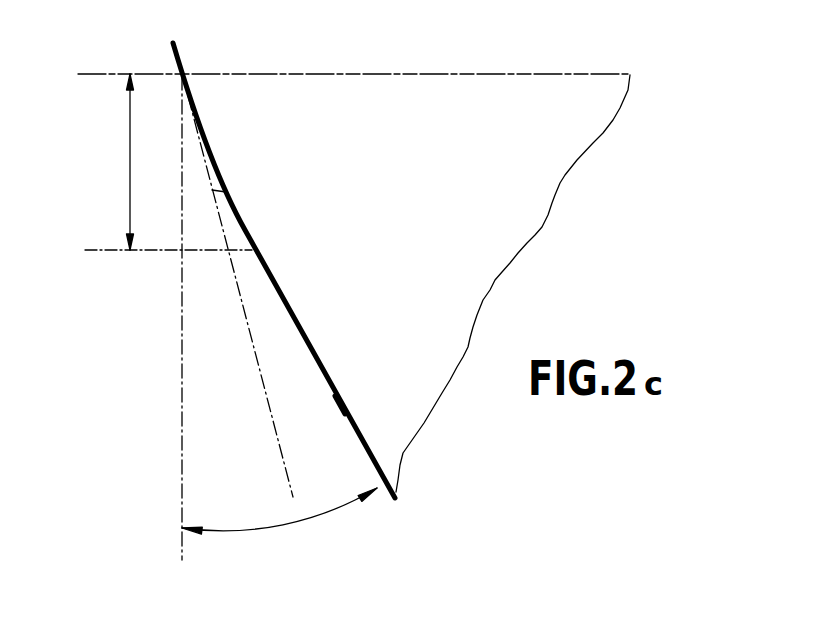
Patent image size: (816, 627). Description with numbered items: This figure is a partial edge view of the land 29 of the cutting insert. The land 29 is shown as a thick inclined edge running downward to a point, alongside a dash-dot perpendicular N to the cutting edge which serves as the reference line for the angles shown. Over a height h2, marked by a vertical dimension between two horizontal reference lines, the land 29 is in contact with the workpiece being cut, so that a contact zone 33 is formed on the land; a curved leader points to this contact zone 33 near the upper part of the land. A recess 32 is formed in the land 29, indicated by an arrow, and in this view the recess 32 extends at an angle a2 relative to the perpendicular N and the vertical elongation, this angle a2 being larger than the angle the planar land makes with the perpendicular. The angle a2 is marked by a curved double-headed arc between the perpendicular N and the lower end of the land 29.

The land 29 is at (345, 414).
The recess 32 is at (286, 380).
The contact zone 33 is at (212, 190).
The perpendicular to the cutting edge N is at (183, 315).
The height of land contact h2 is at (130, 177).
The angle of the recess a2 is at (297, 527).